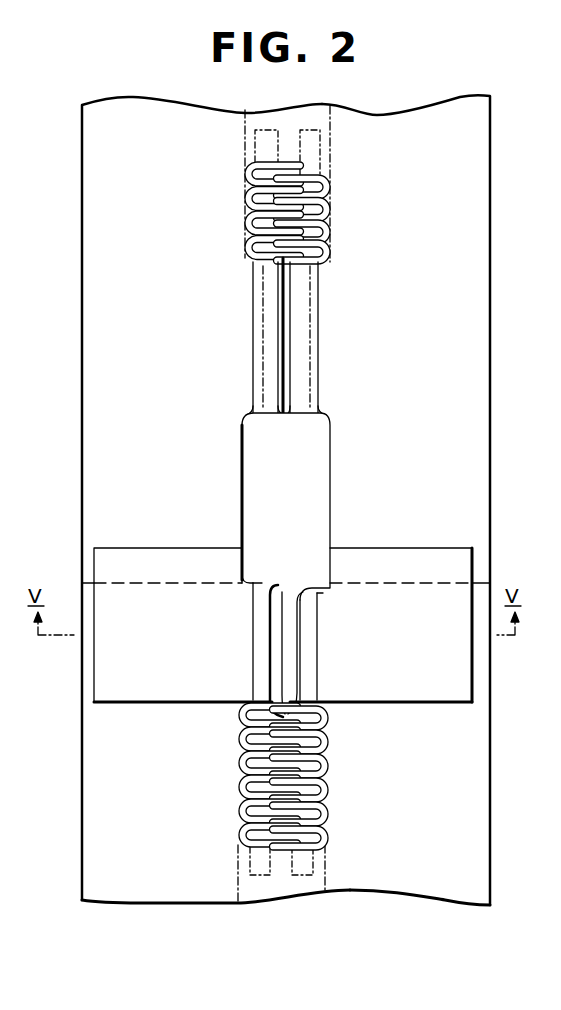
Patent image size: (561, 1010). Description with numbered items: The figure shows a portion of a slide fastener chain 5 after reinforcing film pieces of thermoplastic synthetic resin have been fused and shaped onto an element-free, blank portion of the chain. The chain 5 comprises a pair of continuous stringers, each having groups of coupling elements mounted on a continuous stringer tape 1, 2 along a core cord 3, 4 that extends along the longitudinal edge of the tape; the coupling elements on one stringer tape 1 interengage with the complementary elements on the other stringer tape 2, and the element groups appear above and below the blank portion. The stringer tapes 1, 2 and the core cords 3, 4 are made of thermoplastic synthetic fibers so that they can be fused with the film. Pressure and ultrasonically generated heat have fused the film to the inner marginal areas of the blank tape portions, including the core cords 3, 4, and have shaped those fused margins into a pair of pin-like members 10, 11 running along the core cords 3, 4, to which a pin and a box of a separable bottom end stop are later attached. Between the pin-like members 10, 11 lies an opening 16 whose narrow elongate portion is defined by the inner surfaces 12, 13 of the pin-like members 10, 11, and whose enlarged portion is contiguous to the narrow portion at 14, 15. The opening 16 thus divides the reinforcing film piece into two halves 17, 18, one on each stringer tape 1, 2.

The stringer tape 1 is at (480, 388).
The stringer tape 2 is at (84, 388).
The core cord 3 is at (315, 378).
The core cord 4 is at (257, 367).
The slide fastener chain 5 is at (343, 899).
The pin-like member 10 is at (308, 645).
The pin-like member 11 is at (258, 638).
The inner surface 12 is at (295, 627).
The inner surface 13 is at (282, 613).
The enlarged portion 14 is at (318, 582).
The enlarged portion 15 is at (259, 582).
The opening 16 is at (327, 473).
The half of reinforcing film piece 17 is at (400, 685).
The half of reinforcing film piece 18 is at (165, 687).